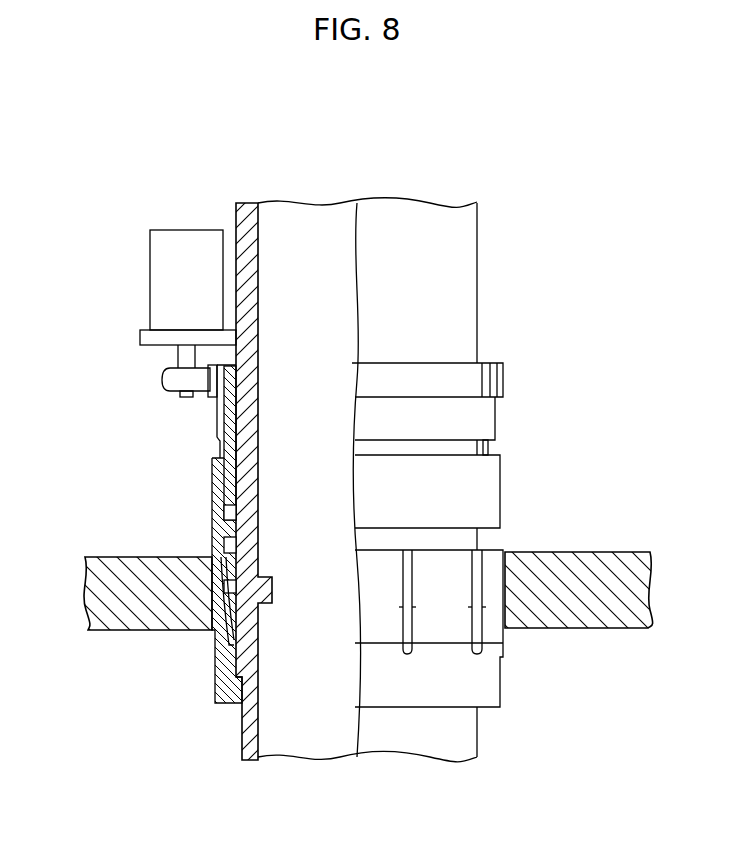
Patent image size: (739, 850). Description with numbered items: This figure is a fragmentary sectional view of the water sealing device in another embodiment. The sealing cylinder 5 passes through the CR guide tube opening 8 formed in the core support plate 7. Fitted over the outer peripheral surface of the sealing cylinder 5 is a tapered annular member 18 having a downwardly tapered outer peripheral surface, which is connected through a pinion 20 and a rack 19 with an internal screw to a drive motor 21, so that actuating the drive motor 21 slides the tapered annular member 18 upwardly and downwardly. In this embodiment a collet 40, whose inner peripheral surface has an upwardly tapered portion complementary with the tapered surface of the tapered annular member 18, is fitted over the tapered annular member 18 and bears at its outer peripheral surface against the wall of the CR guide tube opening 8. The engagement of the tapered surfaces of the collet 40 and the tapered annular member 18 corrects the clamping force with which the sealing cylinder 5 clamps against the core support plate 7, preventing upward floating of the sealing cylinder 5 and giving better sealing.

The sealing cylinder 5 is at (472, 301).
The core support plate 7 is at (617, 630).
The CR guide tube opening 8 is at (505, 636).
The tapered annular member 18 is at (212, 538).
The rack 19 is at (220, 442).
The pinion 20 is at (178, 398).
The drive motor 21 is at (188, 230).
The collet 40 is at (212, 636).